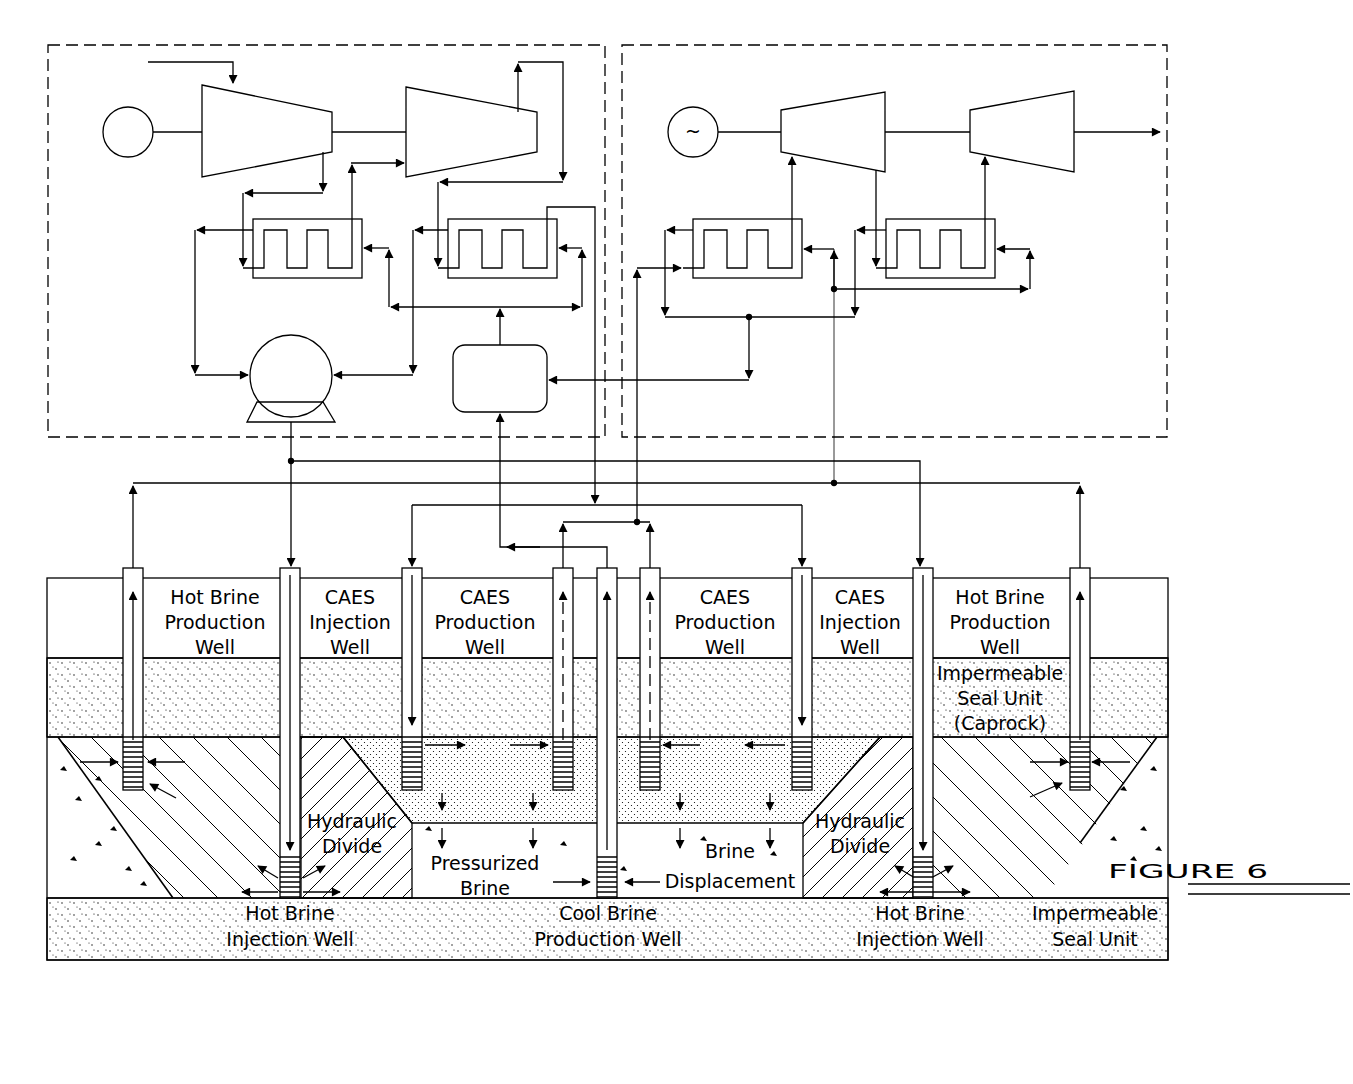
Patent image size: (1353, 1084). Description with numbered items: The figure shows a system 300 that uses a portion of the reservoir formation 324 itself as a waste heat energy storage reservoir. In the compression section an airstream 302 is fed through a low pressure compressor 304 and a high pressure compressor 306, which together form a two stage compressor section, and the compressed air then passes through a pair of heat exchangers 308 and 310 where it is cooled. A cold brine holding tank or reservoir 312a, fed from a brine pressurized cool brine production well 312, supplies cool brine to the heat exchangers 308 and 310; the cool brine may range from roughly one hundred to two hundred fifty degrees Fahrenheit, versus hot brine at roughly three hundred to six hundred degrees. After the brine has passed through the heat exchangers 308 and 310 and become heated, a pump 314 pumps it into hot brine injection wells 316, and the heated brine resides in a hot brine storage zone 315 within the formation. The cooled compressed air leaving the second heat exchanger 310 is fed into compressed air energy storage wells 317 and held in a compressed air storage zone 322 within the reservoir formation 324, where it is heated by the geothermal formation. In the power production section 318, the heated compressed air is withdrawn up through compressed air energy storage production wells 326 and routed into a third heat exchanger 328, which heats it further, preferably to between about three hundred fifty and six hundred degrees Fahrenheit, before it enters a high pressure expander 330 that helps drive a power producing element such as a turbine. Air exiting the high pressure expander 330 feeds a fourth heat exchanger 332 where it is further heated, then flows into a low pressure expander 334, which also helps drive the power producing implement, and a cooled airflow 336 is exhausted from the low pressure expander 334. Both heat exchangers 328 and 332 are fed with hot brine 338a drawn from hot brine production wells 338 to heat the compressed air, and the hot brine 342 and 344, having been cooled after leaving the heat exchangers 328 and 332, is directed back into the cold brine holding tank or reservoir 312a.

The system 300 is at (1226, 100).
The airstream 302 is at (168, 64).
The low pressure (LP) compressor 304 is at (316, 101).
The high pressure (HP) compressor 306 is at (420, 92).
The heat exchanger 308 is at (253, 266).
The heat exchanger 310 is at (460, 219).
The cool brine production well 312 is at (618, 797).
The cold brine holding tank or reservoir 312a is at (453, 390).
The pump 314 is at (268, 393).
The hot brine storage zone 315 is at (205, 880).
The hot brine injection well 316 is at (281, 568).
The compressed air energy storage (CAES) well 317 is at (403, 568).
The power production section 318 is at (1168, 280).
The compressed air storage zone 322 is at (740, 748).
The reservoir formation 324 is at (1174, 786).
The compressed air energy storage (CAES) production well 326 is at (553, 576).
The third heat exchanger 328 is at (762, 219).
The high pressure (HP) expander 330 is at (812, 108).
The fourth heat exchanger 332 is at (955, 219).
The low pressure (LP) expander 334 is at (1067, 91).
The cooled airflow 336 is at (1113, 136).
The hot brine production well 338 is at (124, 568).
The hot brine 338a is at (836, 390).
The hot brine 342 is at (665, 240).
The hot brine 344 is at (855, 240).